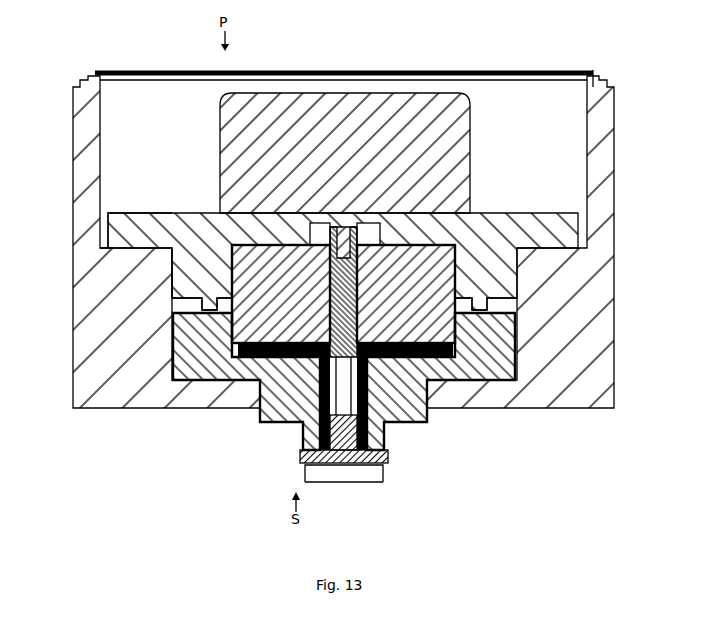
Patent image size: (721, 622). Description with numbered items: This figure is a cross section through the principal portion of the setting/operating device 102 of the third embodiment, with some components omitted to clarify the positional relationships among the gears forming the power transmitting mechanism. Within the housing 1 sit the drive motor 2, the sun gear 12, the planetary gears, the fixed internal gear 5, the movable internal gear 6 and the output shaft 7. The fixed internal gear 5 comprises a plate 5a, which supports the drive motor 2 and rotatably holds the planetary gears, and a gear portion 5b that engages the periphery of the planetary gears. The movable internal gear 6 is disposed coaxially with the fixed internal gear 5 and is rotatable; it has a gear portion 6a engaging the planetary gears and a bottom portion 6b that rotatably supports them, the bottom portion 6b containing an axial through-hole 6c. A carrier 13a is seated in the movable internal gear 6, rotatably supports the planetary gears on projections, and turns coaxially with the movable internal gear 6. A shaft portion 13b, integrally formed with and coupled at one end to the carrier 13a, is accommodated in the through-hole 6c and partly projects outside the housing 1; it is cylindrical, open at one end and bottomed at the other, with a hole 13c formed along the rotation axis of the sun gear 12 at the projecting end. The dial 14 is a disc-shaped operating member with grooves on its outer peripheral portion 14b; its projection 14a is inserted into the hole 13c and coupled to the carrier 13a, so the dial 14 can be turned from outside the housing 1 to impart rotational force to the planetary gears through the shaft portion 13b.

The housing 1 is at (614, 156).
The drive motor 2 is at (334, 93).
The setting/operating device 102 is at (614, 63).
The fixed internal gear 5 is at (341, 261).
The plate 5a is at (108, 232).
The gear portion 5b is at (172, 264).
The sun gear 12 is at (457, 288).
The movable internal gear 6 is at (257, 381).
The gear portion 6a is at (173, 352).
The bottom portion 6b is at (193, 395).
The through-hole 6c is at (303, 428).
The carrier 13a is at (455, 355).
The shaft portion 13b is at (377, 385).
The hole 13c is at (385, 423).
The dial 14 is at (279, 462).
The projection 14a is at (300, 445).
The outer peripheral portion 14b is at (300, 466).
The output shaft 7 is at (385, 468).